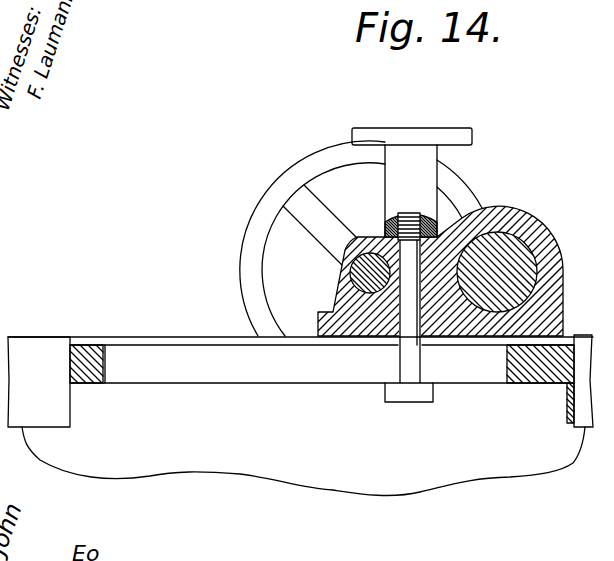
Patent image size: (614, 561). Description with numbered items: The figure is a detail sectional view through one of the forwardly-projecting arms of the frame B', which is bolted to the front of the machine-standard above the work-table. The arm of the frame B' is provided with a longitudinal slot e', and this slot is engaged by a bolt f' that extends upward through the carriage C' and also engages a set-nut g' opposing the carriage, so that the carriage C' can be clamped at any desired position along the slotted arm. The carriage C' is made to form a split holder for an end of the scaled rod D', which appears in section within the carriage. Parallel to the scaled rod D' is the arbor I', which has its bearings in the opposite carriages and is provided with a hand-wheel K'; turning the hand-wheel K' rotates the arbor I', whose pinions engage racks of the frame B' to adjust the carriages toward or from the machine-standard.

The hand-wheel K' is at (338, 238).
The arbor I' is at (342, 273).
The set-nut g' is at (412, 182).
The scaled rod D' is at (507, 250).
The carriage C' is at (455, 271).
The frame B' is at (300, 397).
The longitudinal slot e' is at (251, 361).
The bolt f' is at (385, 307).